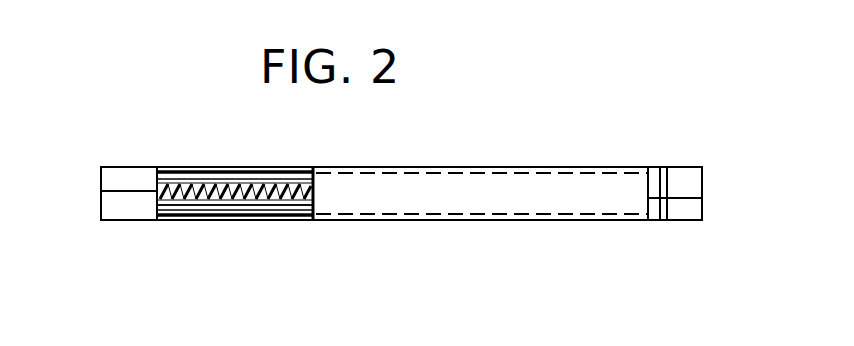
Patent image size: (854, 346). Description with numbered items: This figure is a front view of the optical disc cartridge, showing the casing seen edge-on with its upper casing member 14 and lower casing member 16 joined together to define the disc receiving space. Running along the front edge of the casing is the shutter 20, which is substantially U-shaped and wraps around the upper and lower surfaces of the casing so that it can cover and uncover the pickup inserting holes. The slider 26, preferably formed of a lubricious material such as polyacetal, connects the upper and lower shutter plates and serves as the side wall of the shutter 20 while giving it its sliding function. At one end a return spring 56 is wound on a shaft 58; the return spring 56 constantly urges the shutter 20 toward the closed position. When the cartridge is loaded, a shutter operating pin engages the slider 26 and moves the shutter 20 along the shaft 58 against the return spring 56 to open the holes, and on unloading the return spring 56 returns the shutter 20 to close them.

The shutter 20 is at (401, 141).
The upper casing member 14 is at (698, 183).
The lower casing member 16 is at (680, 212).
The slider 26 is at (472, 190).
The return spring 56 is at (200, 183).
The shaft 58 is at (253, 183).